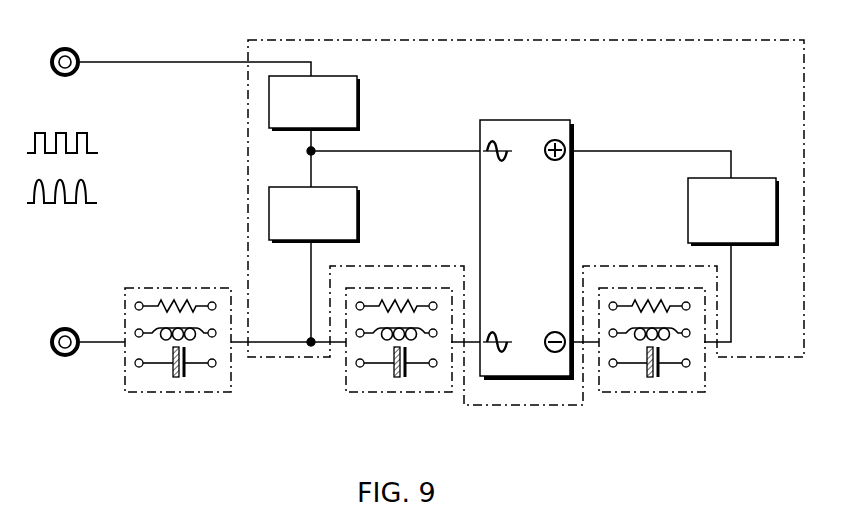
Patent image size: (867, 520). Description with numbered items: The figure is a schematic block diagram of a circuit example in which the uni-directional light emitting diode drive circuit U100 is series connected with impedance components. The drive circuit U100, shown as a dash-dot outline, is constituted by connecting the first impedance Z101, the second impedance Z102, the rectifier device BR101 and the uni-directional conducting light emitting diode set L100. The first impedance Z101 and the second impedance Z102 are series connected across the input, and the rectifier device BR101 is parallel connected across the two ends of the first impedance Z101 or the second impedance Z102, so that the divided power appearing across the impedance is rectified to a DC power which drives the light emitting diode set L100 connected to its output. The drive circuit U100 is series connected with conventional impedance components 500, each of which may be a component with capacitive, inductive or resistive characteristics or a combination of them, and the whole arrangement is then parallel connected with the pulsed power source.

The uni-directional light emitting diode drive circuit U100 is at (431, 40).
The first impedance Z101 is at (314, 103).
The second impedance Z102 is at (314, 215).
The rectifier device BR101 is at (503, 120).
The uni-directional conducting light emitting diode set L100 is at (733, 212).
The impedance component 500 is at (150, 393).